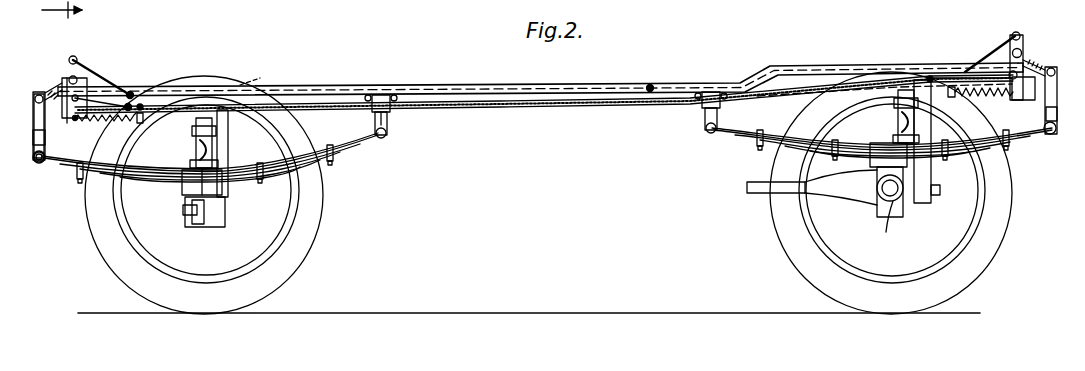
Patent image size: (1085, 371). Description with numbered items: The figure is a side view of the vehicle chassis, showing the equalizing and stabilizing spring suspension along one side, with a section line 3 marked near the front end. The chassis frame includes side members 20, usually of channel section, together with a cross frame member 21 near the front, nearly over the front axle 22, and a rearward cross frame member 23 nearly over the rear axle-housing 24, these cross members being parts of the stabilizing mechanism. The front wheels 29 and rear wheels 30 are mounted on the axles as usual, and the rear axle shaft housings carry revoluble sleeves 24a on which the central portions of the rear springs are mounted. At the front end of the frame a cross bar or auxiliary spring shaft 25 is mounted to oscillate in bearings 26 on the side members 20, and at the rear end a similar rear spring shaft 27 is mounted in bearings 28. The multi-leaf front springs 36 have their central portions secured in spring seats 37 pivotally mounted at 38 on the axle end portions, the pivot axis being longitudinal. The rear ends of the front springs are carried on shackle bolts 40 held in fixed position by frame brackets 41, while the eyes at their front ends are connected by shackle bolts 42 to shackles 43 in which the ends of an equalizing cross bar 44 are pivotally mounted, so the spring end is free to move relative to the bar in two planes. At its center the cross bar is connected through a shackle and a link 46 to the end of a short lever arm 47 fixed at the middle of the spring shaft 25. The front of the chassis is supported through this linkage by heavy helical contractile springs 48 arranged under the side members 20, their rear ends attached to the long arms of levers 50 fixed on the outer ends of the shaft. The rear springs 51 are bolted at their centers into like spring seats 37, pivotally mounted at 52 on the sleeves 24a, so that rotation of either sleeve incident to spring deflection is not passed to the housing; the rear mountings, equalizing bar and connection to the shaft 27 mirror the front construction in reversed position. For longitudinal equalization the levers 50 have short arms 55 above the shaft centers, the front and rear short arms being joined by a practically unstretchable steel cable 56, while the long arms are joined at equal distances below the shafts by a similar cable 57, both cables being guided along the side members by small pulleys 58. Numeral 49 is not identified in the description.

The section line 3 is at (75, 12).
The side members 20 is at (440, 92).
The front cross frame member 21 is at (262, 71).
The front axle 22 is at (205, 224).
The rearward cross frame member 23 is at (924, 80).
The rear axle-housing 24 is at (855, 207).
The revoluble sleeve 24a is at (888, 230).
The auxiliary spring shaft 25 is at (100, 78).
The bearings 26 is at (92, 100).
The rear spring shaft 27 is at (1000, 46).
The bearings 28 is at (975, 78).
The front wheels 29 is at (133, 298).
The rear wheels 30 is at (985, 249).
The front springs 36 is at (295, 210).
The spring seats 37 is at (190, 188).
The pivot 38 is at (226, 210).
The shackle bolts 40 is at (388, 130).
The frame brackets 41 is at (372, 112).
The shackle bolts 42 is at (45, 162).
The shackles 43 is at (36, 161).
The equalizing cross bar 44 is at (33, 142).
The link 46 is at (33, 125).
The short lever arm 47 is at (52, 80).
The helical contractile springs 48 is at (128, 103).
The lever pivot pin 49 is at (132, 98).
The levers 50 is at (78, 122).
The rear springs 51 is at (990, 140).
The pivot 52 is at (878, 182).
The short arms 55 is at (73, 56).
The steel cable 56 is at (708, 92).
The cable 57 is at (705, 120).
The pulleys 58 is at (140, 104).